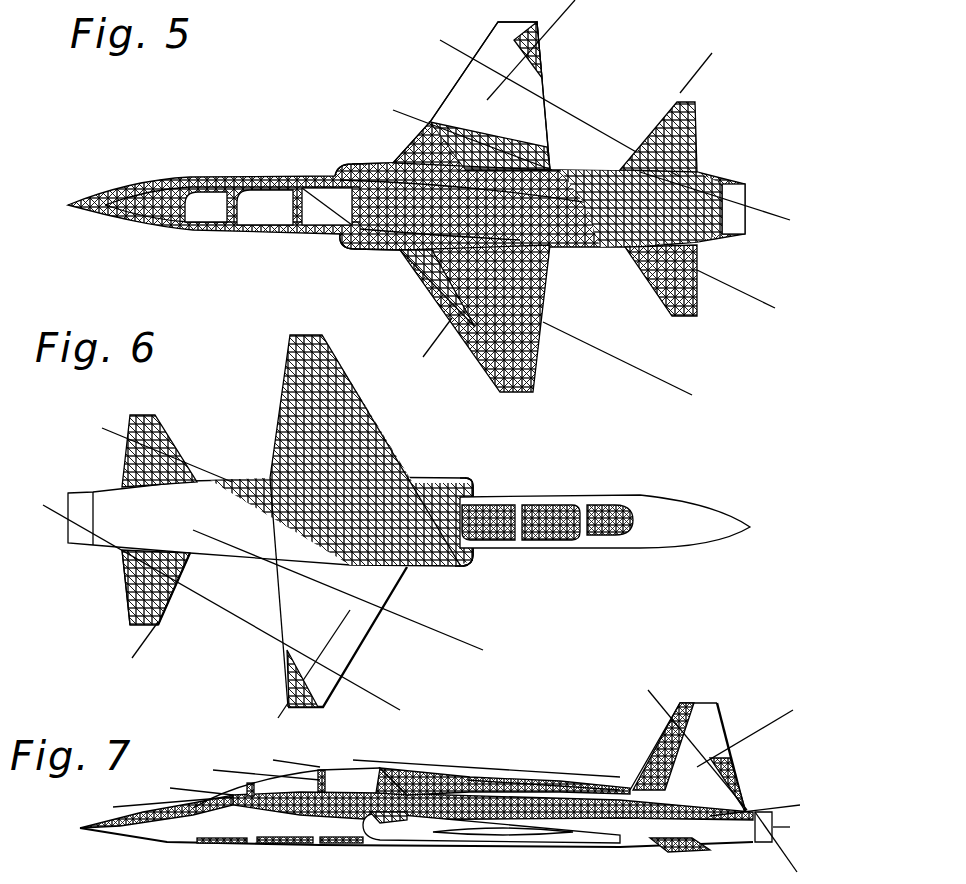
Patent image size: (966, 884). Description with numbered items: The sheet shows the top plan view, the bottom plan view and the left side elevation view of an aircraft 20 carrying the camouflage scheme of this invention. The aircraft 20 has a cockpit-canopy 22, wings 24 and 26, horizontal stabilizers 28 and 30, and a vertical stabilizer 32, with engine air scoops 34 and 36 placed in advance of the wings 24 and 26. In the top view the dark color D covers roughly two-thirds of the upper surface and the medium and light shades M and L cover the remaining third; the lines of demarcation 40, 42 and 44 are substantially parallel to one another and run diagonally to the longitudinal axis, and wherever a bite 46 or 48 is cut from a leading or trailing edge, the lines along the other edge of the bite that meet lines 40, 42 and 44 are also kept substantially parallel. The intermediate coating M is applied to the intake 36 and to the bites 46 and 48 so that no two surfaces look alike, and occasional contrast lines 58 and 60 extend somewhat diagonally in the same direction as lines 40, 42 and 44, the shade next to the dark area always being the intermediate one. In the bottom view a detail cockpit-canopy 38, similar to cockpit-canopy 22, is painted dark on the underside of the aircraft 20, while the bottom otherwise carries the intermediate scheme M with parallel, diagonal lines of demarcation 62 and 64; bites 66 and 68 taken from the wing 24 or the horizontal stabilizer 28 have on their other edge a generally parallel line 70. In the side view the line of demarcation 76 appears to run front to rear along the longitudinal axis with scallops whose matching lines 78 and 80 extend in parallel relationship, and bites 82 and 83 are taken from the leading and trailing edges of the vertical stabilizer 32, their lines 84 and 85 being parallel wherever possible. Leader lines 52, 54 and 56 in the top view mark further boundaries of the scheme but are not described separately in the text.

In FIG. 5, the aircraft 20 is at (191, 160).
In FIG. 6, the aircraft 20 is at (409, 450).
In FIG. 5, the cockpit-canopy 22 is at (268, 178).
In FIG. 7, the cockpit-canopy 22 is at (343, 767).
In FIG. 5, the wing 24 is at (554, 96).
In FIG. 6, the wing 24 is at (326, 598).
In FIG. 5, the wing 26 is at (494, 318).
In FIG. 6, the wing 26 is at (372, 413).
In FIG. 5, the horizontal stabilizer 28 is at (697, 130).
In FIG. 6, the horizontal stabilizer 28 is at (172, 602).
In FIG. 5, the horizontal stabilizer 30 is at (697, 257).
In FIG. 6, the horizontal stabilizer 30 is at (188, 466).
In FIG. 7, the horizontal stabilizer 30 is at (686, 852).
In FIG. 7, the vertical stabilizer 32 is at (476, 776).
In FIG. 5, the engine air scoop 34 is at (356, 165).
In FIG. 6, the engine air scoop 34 is at (472, 566).
In FIG. 5, the engine air scoop 36 is at (352, 250).
In FIG. 6, the engine air scoop 36 is at (464, 478).
In FIG. 7, the engine air scoop 36 is at (395, 835).
In FIG. 6, the detail cockpit-canopy 38 is at (533, 504).
In FIG. 7, the detail cockpit-canopy 38 is at (295, 848).
In FIG. 5, the line of demarcation 40 is at (626, 368).
In FIG. 5, the line of demarcation 42 is at (762, 302).
In FIG. 5, the line of demarcation 44 is at (770, 207).
In FIG. 5, the bite 46 is at (447, 298).
In FIG. 5, the bite 48 is at (537, 53).
In FIG. 5, the reference line 52 is at (445, 334).
In FIG. 5, the reference line 54 is at (495, 100).
In FIG. 5, the reference line 56 is at (696, 74).
In FIG. 5, the line of demarcation 58 is at (535, 143).
In FIG. 5, the line of demarcation 60 is at (670, 178).
In FIG. 6, the line of demarcation 62 is at (403, 698).
In FIG. 6, the line of demarcation 64 is at (476, 641).
In FIG. 6, the bite 66 is at (126, 616).
In FIG. 6, the bite 68 is at (292, 680).
In FIG. 6, the line of demarcation 70 is at (140, 655).
In FIG. 7, the line of demarcation 76 is at (587, 818).
In FIG. 7, the line 78 is at (134, 806).
In FIG. 7, the line 80 is at (505, 779).
In FIG. 7, the bite 82 is at (663, 730).
In FIG. 7, the bite 83 is at (733, 724).
In FIG. 7, the line 84 is at (740, 775).
In FIG. 7, the line 85 is at (782, 724).